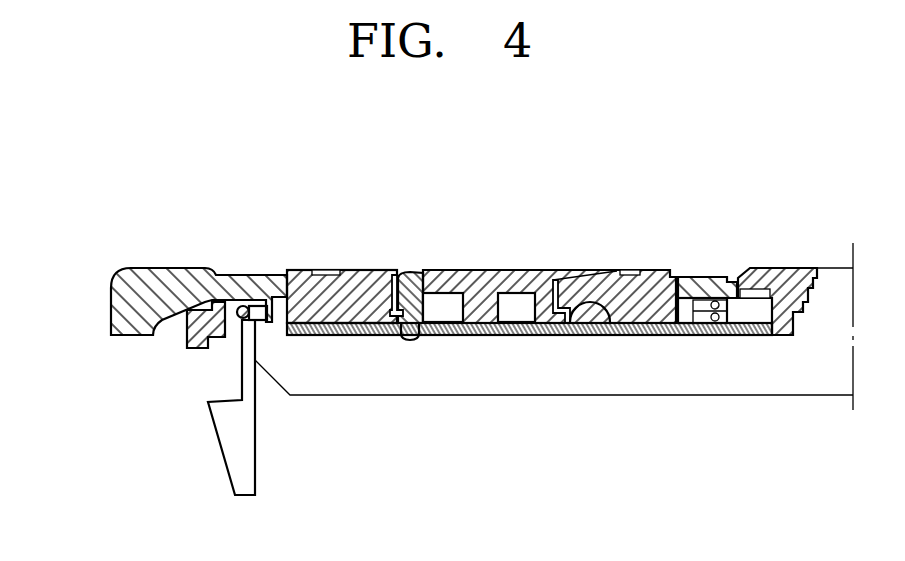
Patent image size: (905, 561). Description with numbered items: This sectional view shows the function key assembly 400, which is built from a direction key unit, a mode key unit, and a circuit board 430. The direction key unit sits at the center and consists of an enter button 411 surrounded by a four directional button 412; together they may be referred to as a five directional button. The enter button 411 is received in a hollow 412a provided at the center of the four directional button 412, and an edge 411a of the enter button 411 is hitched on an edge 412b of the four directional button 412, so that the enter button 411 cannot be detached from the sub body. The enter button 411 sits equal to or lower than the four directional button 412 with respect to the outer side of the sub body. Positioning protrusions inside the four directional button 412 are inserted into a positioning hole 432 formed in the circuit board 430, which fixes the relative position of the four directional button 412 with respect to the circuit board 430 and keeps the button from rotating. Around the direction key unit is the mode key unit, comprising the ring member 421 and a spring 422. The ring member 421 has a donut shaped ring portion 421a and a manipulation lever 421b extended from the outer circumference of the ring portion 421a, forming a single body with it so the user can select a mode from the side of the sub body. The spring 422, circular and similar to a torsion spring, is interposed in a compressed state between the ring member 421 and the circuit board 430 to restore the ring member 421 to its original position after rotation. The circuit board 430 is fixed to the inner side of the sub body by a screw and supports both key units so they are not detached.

The function key assembly 400 is at (117, 245).
The ring member 421 is at (102, 316).
The ring portion 421a is at (714, 277).
The manipulation lever 421b is at (133, 318).
The spring 422 is at (723, 277).
The four directional button 412 is at (310, 335).
The hollow 412a is at (413, 273).
The edge of the four directional button 412b is at (608, 300).
The enter button 411 is at (480, 335).
The edge of the enter button 411a is at (562, 335).
The positioning hole 432 is at (405, 338).
The circuit board 430 is at (707, 335).